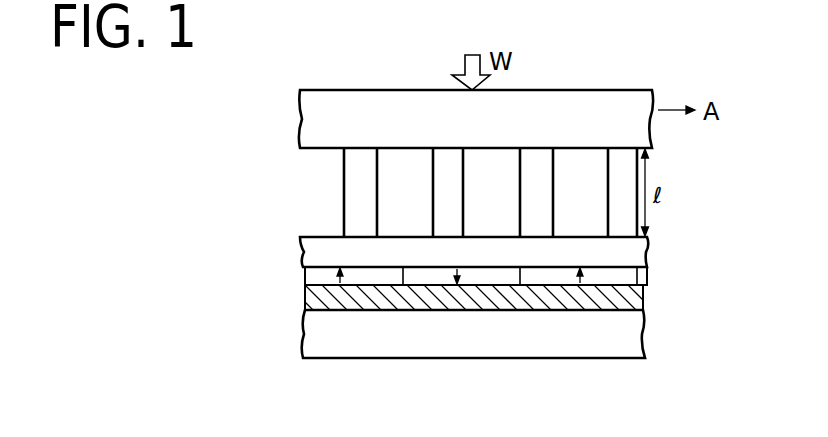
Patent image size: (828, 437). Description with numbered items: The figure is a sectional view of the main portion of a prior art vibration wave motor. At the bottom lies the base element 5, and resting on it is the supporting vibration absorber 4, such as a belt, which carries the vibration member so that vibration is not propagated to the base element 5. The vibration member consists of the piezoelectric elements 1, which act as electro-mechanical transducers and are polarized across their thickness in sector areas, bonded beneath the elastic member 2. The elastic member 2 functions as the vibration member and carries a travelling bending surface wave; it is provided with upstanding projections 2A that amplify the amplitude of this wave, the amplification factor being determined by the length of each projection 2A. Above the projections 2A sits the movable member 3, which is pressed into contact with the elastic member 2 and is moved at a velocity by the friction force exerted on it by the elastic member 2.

The piezoelectric elements 1 is at (306, 269).
The elastic member 2 is at (318, 255).
The projections 2A is at (358, 201).
The movable member 3 is at (318, 113).
The supporting vibration absorber 4 is at (640, 302).
The base element 5 is at (630, 335).